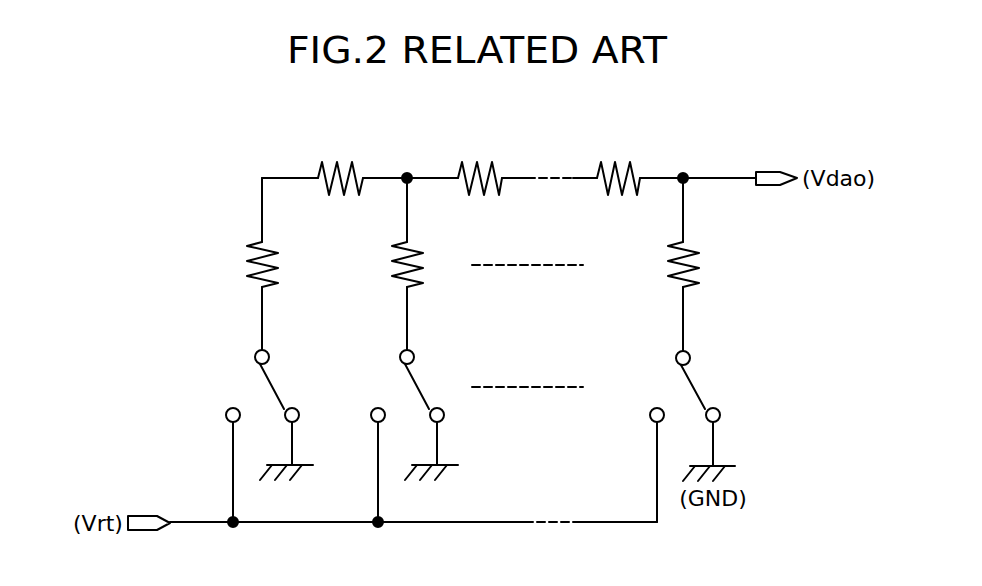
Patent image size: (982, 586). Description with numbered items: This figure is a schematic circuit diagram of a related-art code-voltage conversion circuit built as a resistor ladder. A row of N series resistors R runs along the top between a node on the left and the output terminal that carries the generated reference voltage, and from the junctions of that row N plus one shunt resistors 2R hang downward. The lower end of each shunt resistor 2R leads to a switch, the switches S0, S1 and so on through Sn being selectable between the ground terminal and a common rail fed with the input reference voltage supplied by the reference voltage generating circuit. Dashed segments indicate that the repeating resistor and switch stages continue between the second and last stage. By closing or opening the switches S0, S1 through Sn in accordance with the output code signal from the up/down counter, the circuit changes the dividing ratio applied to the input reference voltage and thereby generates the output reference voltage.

The resistor having resistance value R is at (479, 164).
The resistor having resistance value 2R is at (454, 264).
The switch S0 is at (263, 436).
The switch S1 is at (408, 436).
The switch Sn is at (684, 436).